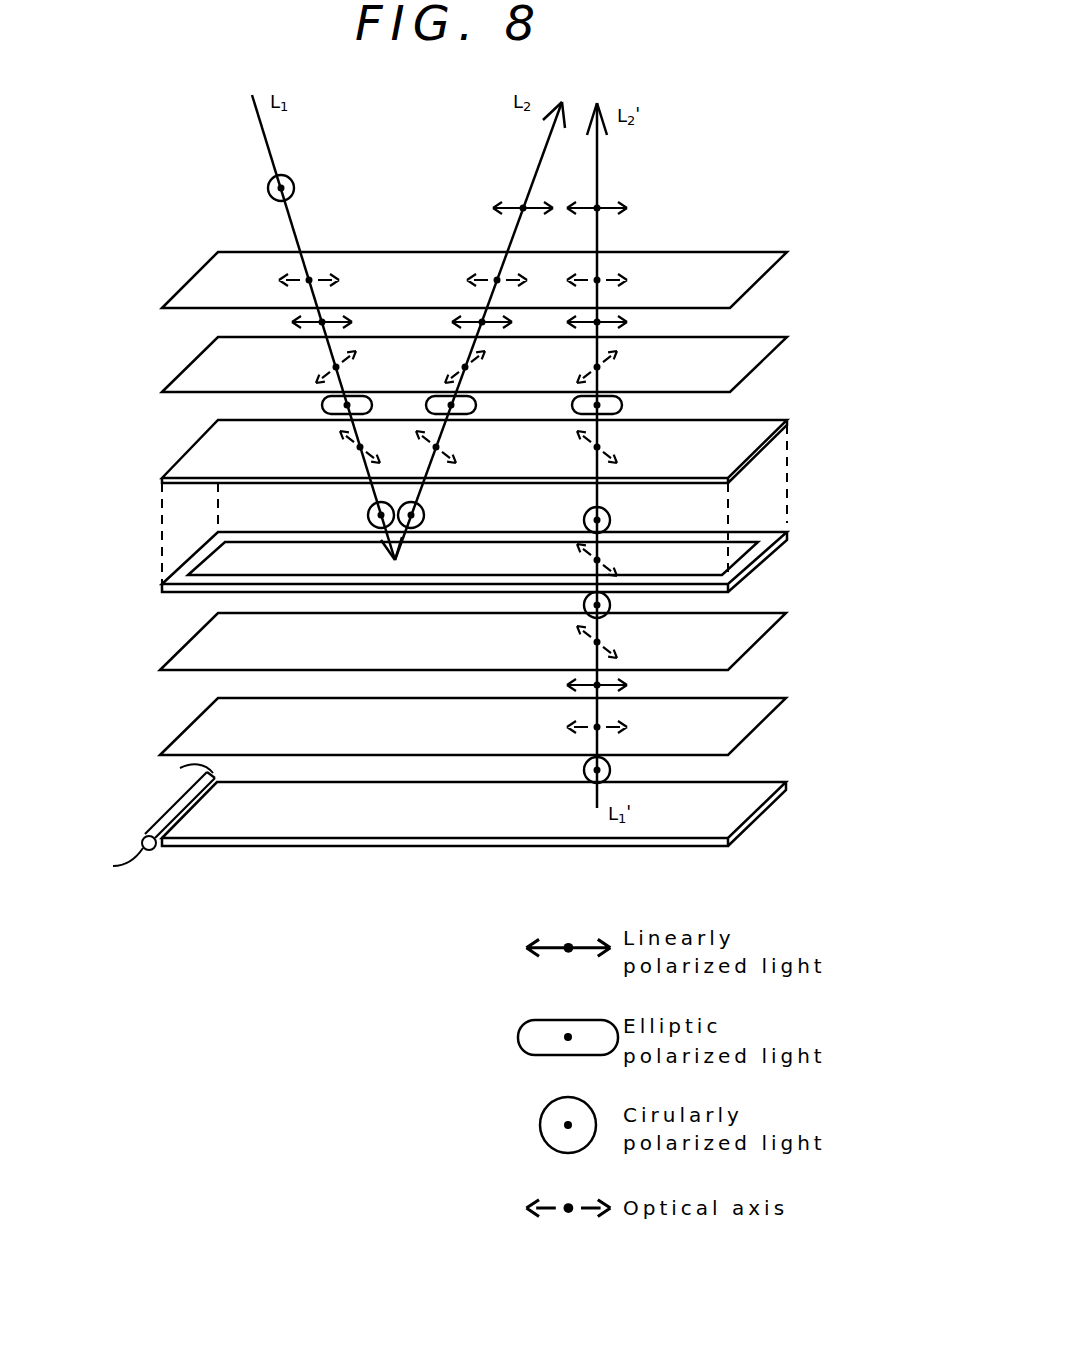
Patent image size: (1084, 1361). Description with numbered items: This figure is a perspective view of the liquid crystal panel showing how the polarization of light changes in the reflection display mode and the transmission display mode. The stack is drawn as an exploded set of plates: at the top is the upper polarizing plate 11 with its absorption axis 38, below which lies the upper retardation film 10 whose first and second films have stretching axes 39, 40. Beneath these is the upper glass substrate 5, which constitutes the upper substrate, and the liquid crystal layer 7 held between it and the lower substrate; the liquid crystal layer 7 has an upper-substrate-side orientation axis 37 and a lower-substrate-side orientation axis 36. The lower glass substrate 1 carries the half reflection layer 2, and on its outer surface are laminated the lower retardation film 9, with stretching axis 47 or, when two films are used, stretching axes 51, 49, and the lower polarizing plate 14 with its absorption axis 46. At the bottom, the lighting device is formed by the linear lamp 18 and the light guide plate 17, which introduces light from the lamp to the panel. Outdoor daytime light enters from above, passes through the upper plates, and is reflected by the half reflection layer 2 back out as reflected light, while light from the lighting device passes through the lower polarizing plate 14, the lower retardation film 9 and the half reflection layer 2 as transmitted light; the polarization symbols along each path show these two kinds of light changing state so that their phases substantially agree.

The lower glass substrate 1 is at (757, 553).
The half reflection layer 2 is at (737, 545).
The upper glass substrate 5 is at (755, 435).
The liquid crystal layer 7 is at (773, 473).
The lower retardation film 9 is at (195, 652).
The upper retardation film 10 is at (760, 352).
The upper polarizing plate 11 is at (753, 273).
The lower polarizing plate 14 is at (202, 728).
The light guide plate 17 is at (362, 847).
The linear lamp 18 is at (162, 820).
The lower-substrate-side orientation axis 36 is at (603, 553).
The upper-substrate-side orientation axis 37 is at (603, 450).
The absorption axis of the upper polarizing plate 38 is at (605, 282).
The stretching axis of the first upper retardation film 39 is at (643, 367).
The stretching axis of the second upper retardation film 40 is at (612, 356).
The absorption axis of the lower polarizing plate 46 is at (600, 724).
The stretching axis of the lower retardation film 47 is at (757, 629).
The stretching axis of the second lower retardation film 49 is at (597, 642).
The stretching axis of the first lower retardation film 51 is at (598, 643).